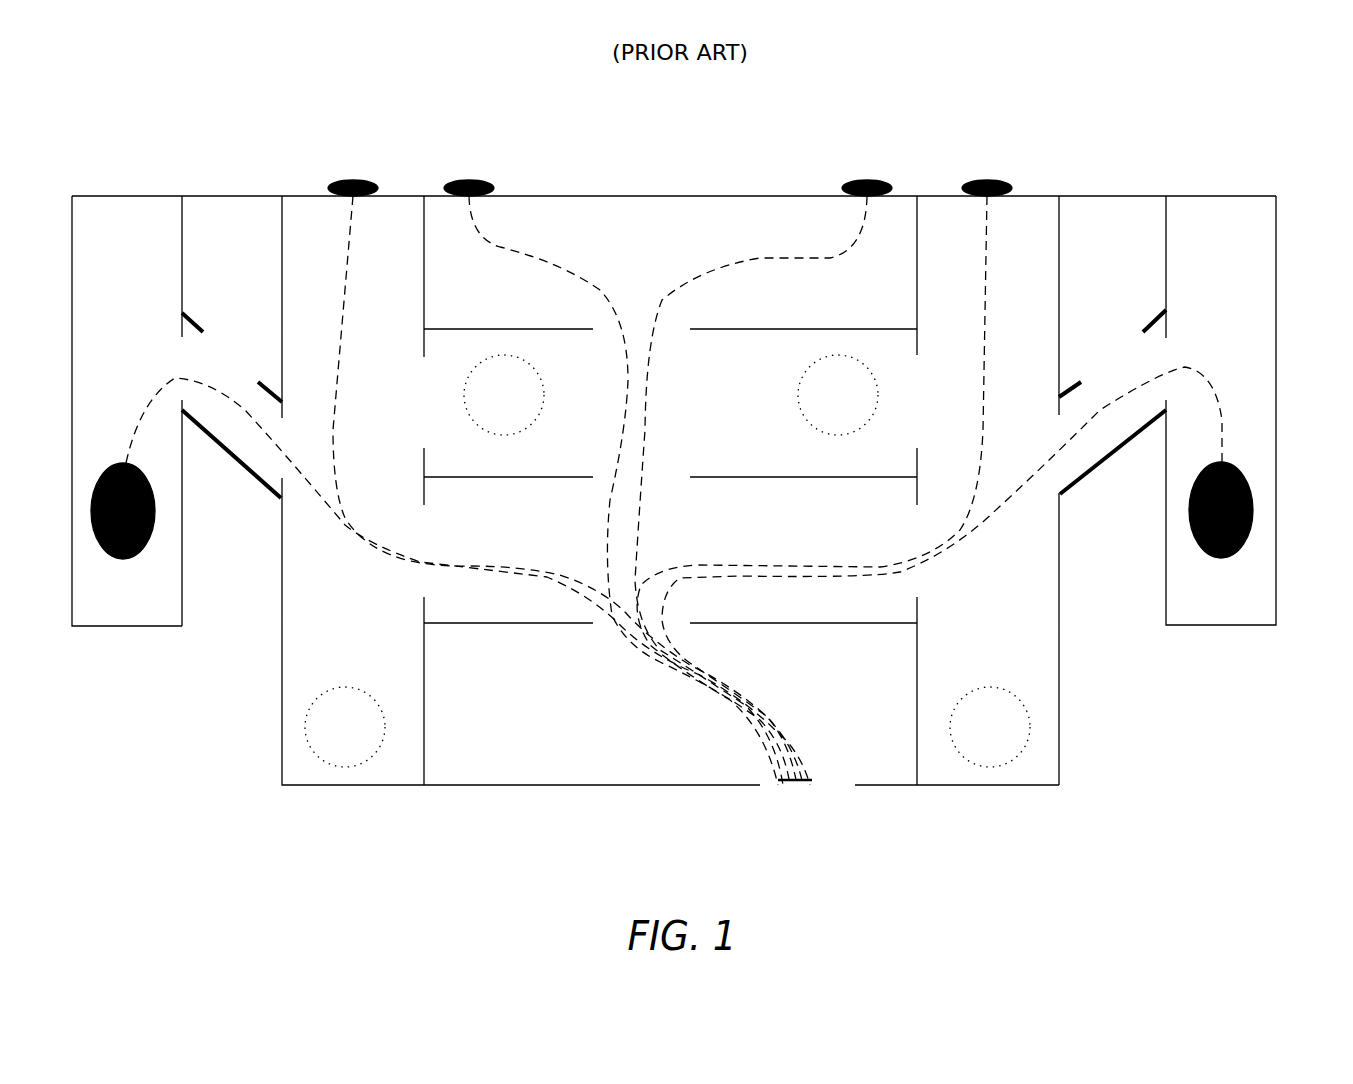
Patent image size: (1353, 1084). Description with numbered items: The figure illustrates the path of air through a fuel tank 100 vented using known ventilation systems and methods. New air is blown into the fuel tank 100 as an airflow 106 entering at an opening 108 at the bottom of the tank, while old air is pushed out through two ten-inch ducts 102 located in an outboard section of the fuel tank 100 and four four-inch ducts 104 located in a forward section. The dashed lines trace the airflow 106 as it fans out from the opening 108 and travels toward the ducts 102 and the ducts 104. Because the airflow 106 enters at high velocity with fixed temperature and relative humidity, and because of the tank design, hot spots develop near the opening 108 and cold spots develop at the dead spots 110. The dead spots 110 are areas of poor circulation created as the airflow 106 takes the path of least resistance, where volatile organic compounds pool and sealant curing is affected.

The fuel tank 100 is at (222, 778).
The ducts 102 is at (155, 515).
The ducts 104 is at (350, 182).
The airflow 106 is at (679, 679).
The opening 108 is at (800, 796).
The dead spots 110 is at (1011, 740).